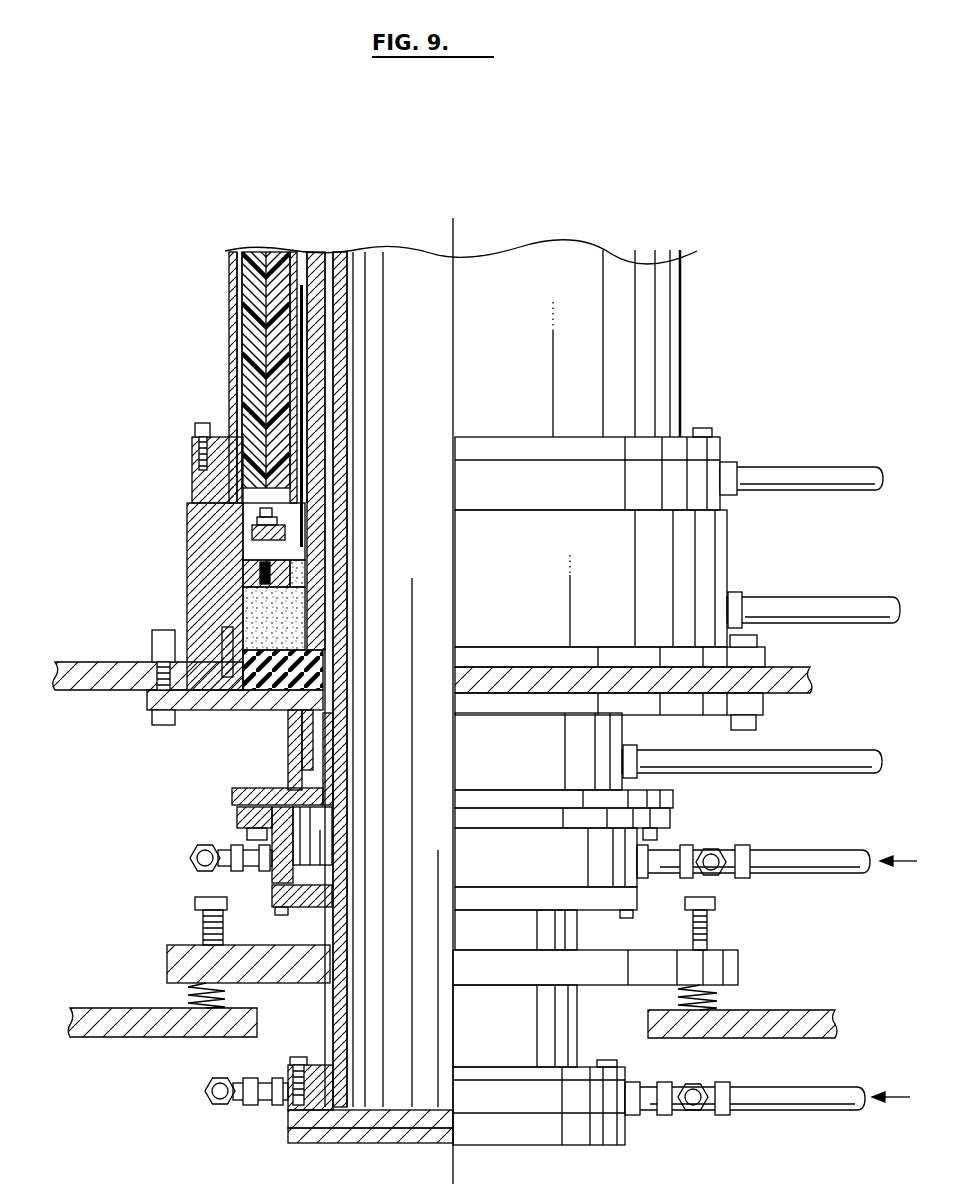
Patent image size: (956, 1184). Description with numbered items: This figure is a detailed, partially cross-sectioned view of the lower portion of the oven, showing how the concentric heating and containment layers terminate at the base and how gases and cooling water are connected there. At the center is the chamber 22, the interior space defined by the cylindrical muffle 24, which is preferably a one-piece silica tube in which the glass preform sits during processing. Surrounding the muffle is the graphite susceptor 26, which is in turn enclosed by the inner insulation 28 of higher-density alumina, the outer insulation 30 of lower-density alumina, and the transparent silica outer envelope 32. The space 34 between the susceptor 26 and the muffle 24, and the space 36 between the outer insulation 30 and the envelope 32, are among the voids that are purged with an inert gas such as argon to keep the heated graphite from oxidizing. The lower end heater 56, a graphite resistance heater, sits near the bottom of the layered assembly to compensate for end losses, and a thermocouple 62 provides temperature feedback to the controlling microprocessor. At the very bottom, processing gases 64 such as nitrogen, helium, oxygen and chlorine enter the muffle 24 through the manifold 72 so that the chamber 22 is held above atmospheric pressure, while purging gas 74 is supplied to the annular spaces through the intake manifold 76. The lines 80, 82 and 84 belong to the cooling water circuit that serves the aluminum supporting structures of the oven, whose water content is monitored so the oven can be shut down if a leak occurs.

The chamber 22 is at (414, 417).
The cylindrical muffle 24 is at (340, 252).
The susceptor 26 is at (320, 252).
The inner insulation 28 is at (277, 290).
The outer insulation 30 is at (255, 328).
The outer envelope 32 is at (230, 351).
The space 34 is at (329, 288).
The space 36 is at (240, 384).
The lower end heater 56 is at (293, 257).
The thermocouple 62 is at (304, 516).
The processing gases 64 is at (900, 1097).
The manifold 72 is at (228, 1106).
The purging gas 74 is at (904, 861).
The intake manifold 76 is at (196, 848).
The cooling water line 80 is at (815, 774).
The cooling water line 82 is at (830, 624).
The cooling water line 84 is at (812, 490).